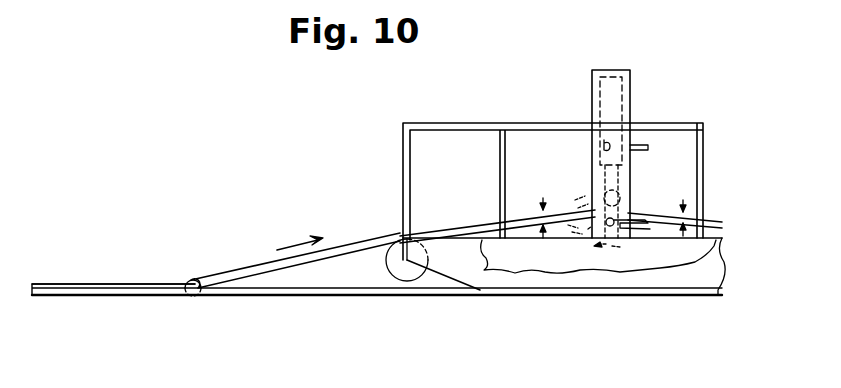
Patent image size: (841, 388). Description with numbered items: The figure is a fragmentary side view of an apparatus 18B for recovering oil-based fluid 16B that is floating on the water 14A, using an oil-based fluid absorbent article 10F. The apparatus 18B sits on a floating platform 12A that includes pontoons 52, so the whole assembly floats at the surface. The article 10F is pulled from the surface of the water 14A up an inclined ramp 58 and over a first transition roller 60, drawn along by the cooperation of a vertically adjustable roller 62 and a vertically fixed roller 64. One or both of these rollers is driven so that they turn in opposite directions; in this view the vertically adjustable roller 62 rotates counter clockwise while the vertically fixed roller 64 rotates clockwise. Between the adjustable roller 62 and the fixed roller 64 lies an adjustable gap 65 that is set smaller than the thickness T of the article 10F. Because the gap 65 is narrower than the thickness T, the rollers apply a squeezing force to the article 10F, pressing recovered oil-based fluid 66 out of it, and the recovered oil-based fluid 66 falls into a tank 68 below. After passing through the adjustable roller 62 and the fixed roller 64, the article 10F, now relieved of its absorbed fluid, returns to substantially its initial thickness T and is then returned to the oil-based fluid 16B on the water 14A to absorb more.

The oil-based fluid absorbent article 10F is at (246, 264).
The apparatus 18B is at (390, 175).
The vertically adjustable roller 62 is at (640, 190).
The adjustable gap 65 is at (634, 206).
The recovered oil-based fluid 66 is at (566, 190).
The inclined ramp 58 is at (270, 302).
The water 14A is at (313, 345).
The oil-based fluid 16B is at (348, 300).
The first transition roller 60 is at (400, 273).
The floating platform 12A is at (446, 280).
The pontoons 52 is at (512, 280).
The tank 68 is at (580, 265).
The vertically fixed roller 64 is at (655, 245).
The thickness T is at (540, 210).